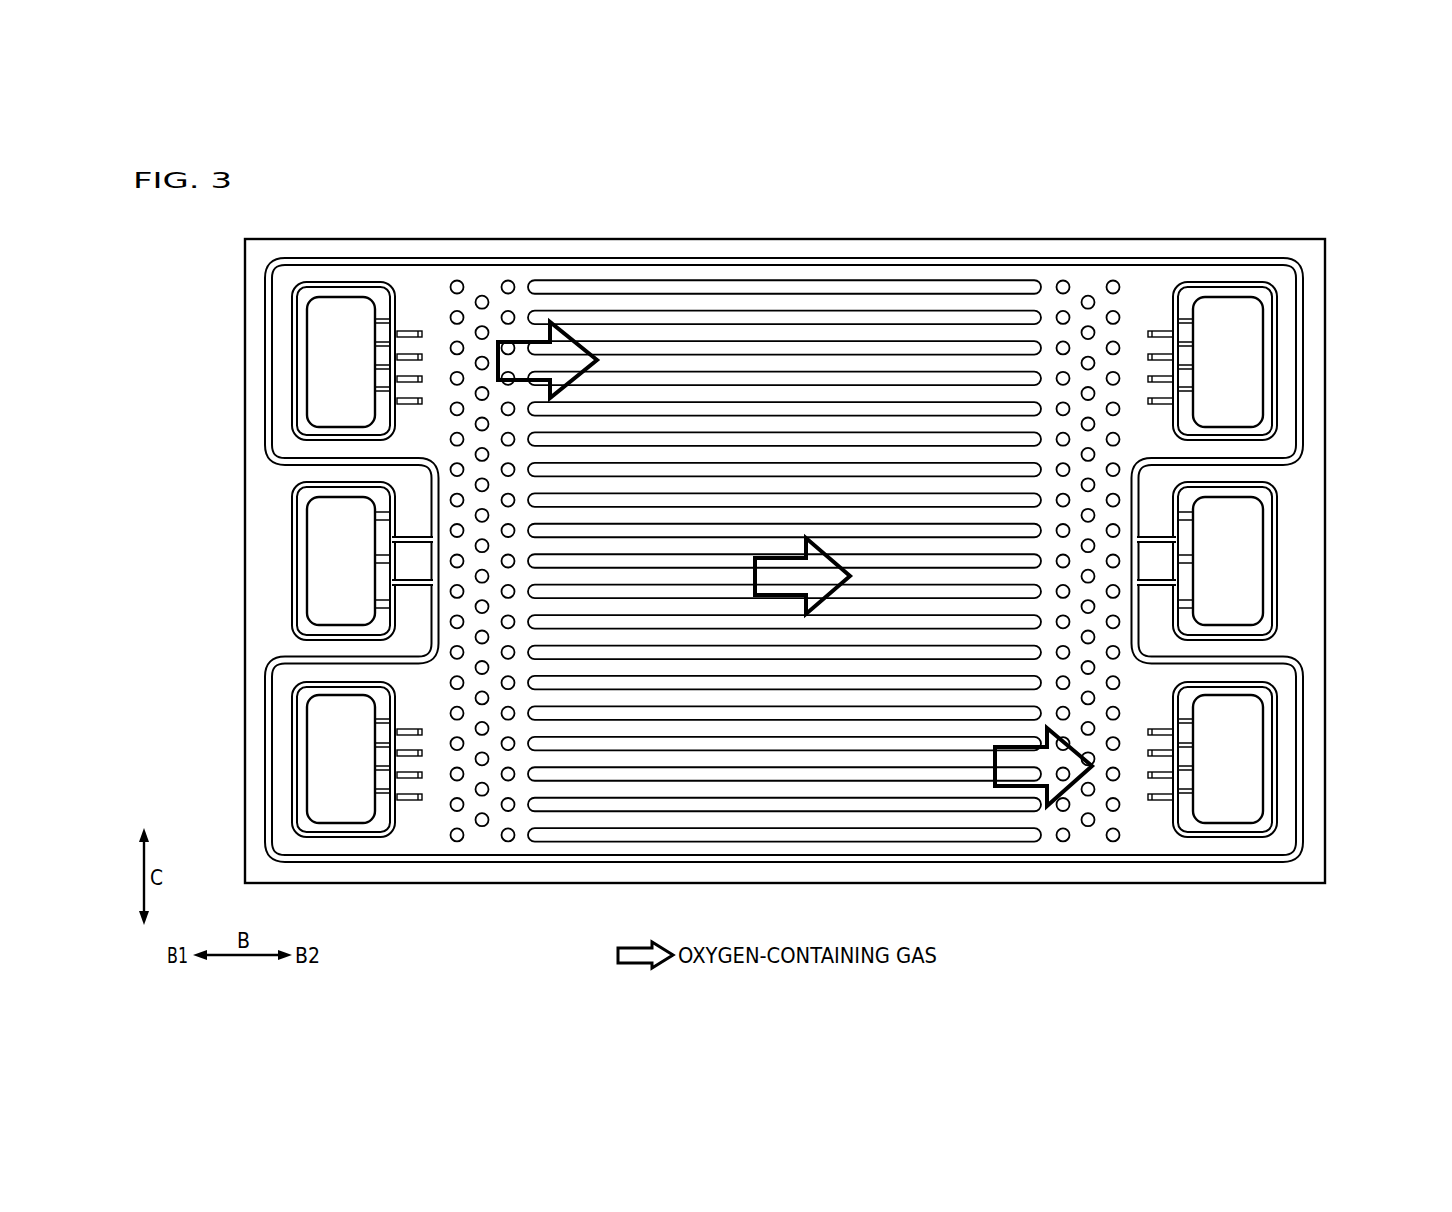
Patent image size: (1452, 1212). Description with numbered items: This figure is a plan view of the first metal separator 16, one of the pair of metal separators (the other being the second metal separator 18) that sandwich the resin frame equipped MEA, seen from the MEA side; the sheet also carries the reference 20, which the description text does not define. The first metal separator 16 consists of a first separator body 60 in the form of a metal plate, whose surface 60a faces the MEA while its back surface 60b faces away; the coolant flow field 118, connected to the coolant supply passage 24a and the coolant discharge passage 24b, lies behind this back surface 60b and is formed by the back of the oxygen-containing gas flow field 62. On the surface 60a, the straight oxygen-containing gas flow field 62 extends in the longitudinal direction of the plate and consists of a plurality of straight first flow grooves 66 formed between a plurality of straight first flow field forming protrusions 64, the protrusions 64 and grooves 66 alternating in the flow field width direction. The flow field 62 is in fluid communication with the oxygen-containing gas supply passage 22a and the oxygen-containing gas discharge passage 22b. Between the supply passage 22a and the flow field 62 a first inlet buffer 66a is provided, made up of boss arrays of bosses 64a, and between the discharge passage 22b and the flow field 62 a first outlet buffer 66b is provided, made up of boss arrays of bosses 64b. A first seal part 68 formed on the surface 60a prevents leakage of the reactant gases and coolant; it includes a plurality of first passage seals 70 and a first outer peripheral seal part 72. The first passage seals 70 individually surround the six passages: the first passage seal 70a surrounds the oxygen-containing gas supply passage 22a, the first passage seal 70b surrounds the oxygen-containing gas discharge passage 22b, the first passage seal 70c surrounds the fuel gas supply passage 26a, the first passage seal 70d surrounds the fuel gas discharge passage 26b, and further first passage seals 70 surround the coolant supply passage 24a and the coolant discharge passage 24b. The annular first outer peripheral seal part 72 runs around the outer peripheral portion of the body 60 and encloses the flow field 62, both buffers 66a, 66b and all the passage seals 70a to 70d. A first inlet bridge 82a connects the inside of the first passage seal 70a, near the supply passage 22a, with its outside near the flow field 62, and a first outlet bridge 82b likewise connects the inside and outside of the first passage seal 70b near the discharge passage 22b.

The first metal separator 16 is at (317, 236).
The second metal separator 18 is at (380, 236).
The joint separator 20 is at (1300, 189).
The oxygen-containing gas supply passage 22a is at (322, 327).
The oxygen-containing gas discharge passage 22b is at (1245, 777).
The coolant supply passage 24a is at (333, 573).
The coolant discharge passage 24b is at (1245, 568).
The fuel gas supply passage 26a is at (1242, 333).
The fuel gas discharge passage 26b is at (322, 722).
The first separator body 60 is at (672, 237).
The surface 60a is at (644, 250).
The back surface 60b is at (702, 250).
The oxygen-containing gas flow field 62 is at (775, 302).
The first flow field forming protrusions 64 is at (884, 287).
The bosses 64a is at (508, 281).
The bosses 64b is at (1113, 281).
The first flow grooves 66 is at (784, 518).
The first inlet buffer 66a is at (483, 561).
The first outlet buffer 66b is at (1088, 561).
The first seal part 68 is at (1335, 926).
The first passage seals 70 is at (293, 516).
The first passage seal 70a is at (290, 356).
The first passage seal 70b is at (1255, 836).
The first passage seal 70c is at (1280, 361).
The first passage seal 70d is at (290, 746).
The first outer peripheral seal part 72 is at (1208, 858).
The first inlet bridge 82a is at (410, 320).
The first outlet bridge 82b is at (1158, 812).
The coolant flow field 118 is at (573, 815).